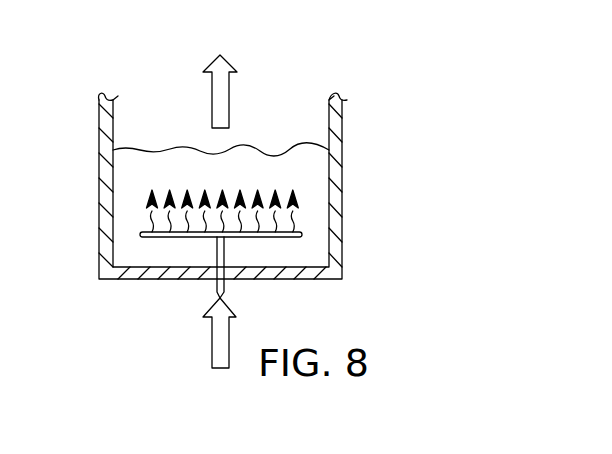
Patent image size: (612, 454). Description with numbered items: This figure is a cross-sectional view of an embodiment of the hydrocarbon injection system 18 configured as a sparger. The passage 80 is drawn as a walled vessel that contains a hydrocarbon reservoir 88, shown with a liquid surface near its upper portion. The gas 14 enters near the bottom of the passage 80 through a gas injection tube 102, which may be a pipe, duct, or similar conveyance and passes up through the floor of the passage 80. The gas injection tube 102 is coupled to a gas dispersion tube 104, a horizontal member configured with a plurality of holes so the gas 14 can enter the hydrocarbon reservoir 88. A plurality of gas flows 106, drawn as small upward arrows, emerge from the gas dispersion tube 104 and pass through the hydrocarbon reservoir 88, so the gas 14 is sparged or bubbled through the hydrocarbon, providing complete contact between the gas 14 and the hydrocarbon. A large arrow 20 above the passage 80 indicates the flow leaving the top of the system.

The gas 14 is at (211, 345).
The hydrocarbon injection system 18 is at (309, 44).
The outlet flow 20 is at (229, 64).
The passage 80 is at (343, 192).
The hydrocarbon reservoir 88 is at (318, 182).
The gas injection tube 102 is at (226, 288).
The gas dispersion tube 104 is at (141, 237).
The gas flows 106 is at (150, 222).